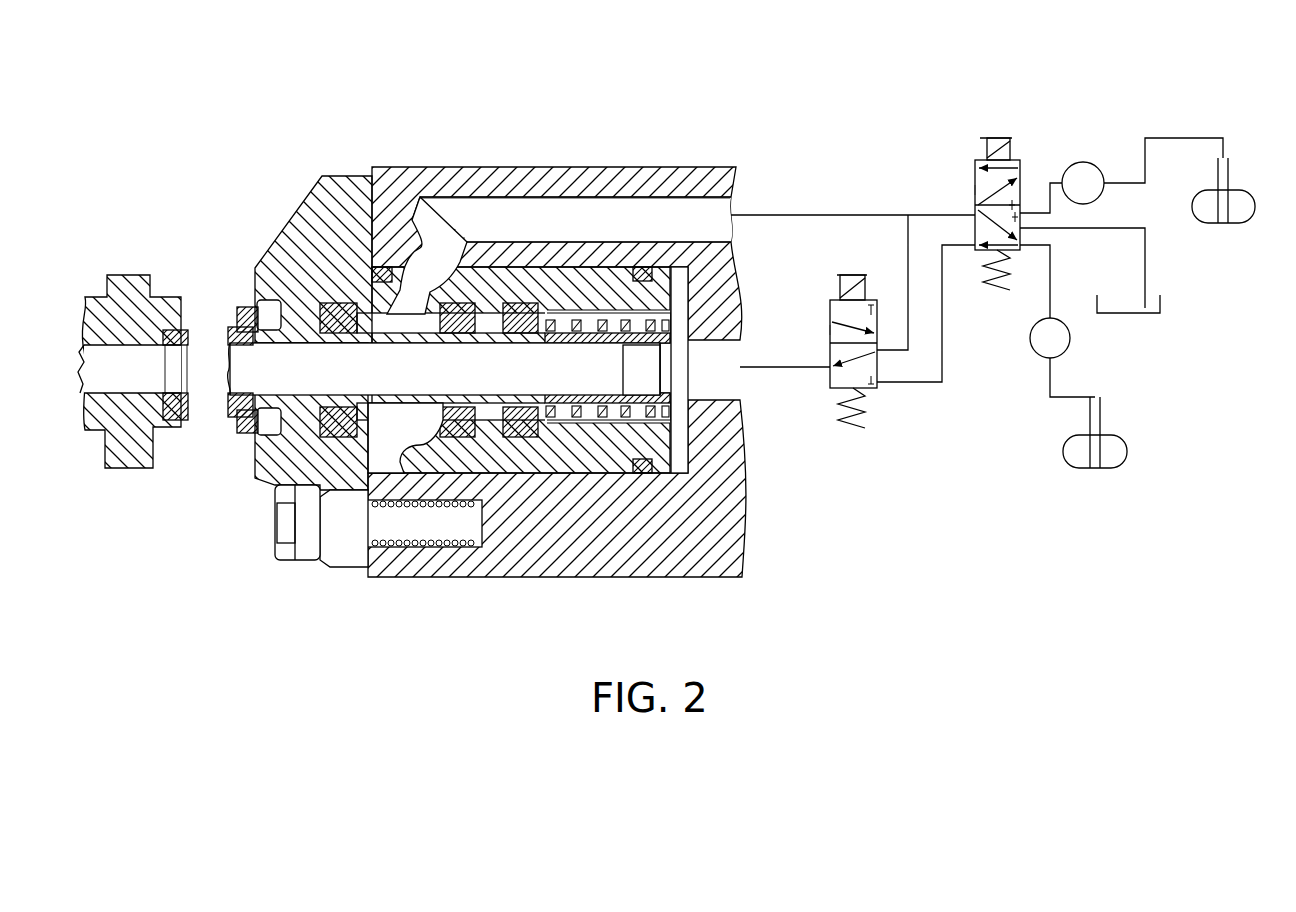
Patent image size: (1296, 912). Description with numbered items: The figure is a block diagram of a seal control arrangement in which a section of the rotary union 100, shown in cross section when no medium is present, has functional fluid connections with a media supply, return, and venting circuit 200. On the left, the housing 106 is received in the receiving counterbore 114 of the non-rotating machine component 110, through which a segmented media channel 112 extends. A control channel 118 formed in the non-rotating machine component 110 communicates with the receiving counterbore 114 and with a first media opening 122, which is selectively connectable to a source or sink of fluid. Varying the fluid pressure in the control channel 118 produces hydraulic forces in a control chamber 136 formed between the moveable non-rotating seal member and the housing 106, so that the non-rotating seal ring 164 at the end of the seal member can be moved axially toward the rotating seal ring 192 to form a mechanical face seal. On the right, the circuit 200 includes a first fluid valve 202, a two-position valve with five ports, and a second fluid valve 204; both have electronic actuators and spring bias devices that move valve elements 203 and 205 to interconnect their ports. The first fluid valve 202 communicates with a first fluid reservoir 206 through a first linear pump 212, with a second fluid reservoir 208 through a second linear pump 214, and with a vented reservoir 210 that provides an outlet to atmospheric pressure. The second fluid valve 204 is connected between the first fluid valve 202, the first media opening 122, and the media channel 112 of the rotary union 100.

The rotary union 100 is at (584, 110).
The housing 106 is at (273, 453).
The non-rotating machine component 110 is at (658, 537).
The media channel 112 is at (555, 362).
The receiving counterbore 114 is at (679, 457).
The control channel 118 is at (447, 205).
The first media opening 122 is at (717, 207).
The control chamber 136 is at (291, 285).
The non-rotating seal ring 164 is at (230, 330).
The rotating seal ring 192 is at (177, 318).
The media supply, return, and venting circuit 200 is at (1107, 84).
The first fluid valve 202 is at (1018, 116).
The valve element 203 is at (975, 192).
The second fluid valve 204 is at (892, 404).
The valve element 205 is at (830, 332).
The first fluid reservoir 206 is at (1238, 214).
The second fluid reservoir 208 is at (1110, 450).
The vented reservoir 210 is at (1148, 293).
The first linear pump 212 is at (1077, 182).
The second linear pump 214 is at (1055, 336).